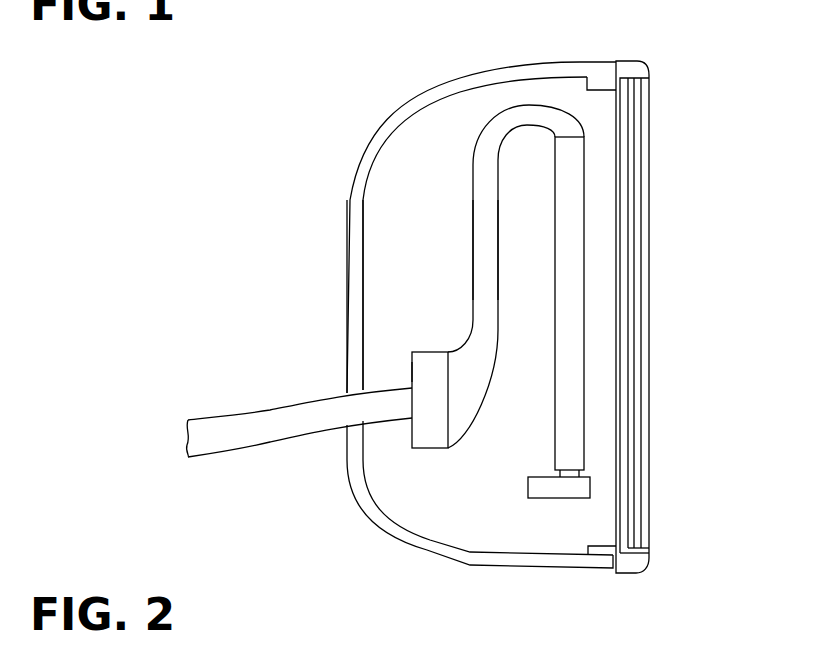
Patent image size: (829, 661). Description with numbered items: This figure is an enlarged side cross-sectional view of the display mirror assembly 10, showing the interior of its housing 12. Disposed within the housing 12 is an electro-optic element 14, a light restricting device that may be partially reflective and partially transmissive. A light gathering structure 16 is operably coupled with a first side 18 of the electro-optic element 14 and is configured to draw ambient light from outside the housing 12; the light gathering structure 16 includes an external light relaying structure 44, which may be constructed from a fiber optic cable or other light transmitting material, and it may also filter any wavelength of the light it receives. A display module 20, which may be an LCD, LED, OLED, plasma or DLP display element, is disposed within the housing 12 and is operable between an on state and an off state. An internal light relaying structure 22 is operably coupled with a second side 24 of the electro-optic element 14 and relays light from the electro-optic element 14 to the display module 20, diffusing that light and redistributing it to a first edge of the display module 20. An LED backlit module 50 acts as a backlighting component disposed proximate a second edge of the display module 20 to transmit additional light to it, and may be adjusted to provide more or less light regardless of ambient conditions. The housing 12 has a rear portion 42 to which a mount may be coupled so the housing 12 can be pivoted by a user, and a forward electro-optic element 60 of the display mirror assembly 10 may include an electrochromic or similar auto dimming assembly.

The display mirror assembly 10 is at (720, 115).
The housing 12 is at (515, 78).
The electro-optic element 14 is at (423, 362).
The light gathering structure 16 is at (267, 410).
The first side 18 is at (412, 372).
The display module 20 is at (584, 185).
The internal light relaying structure 22 is at (482, 158).
The second side 24 is at (448, 378).
The rear portion 42 is at (345, 289).
The external light relaying structure 44 is at (212, 447).
The LED backlit module 50 is at (542, 490).
The forward electro-optic element 60 is at (649, 333).